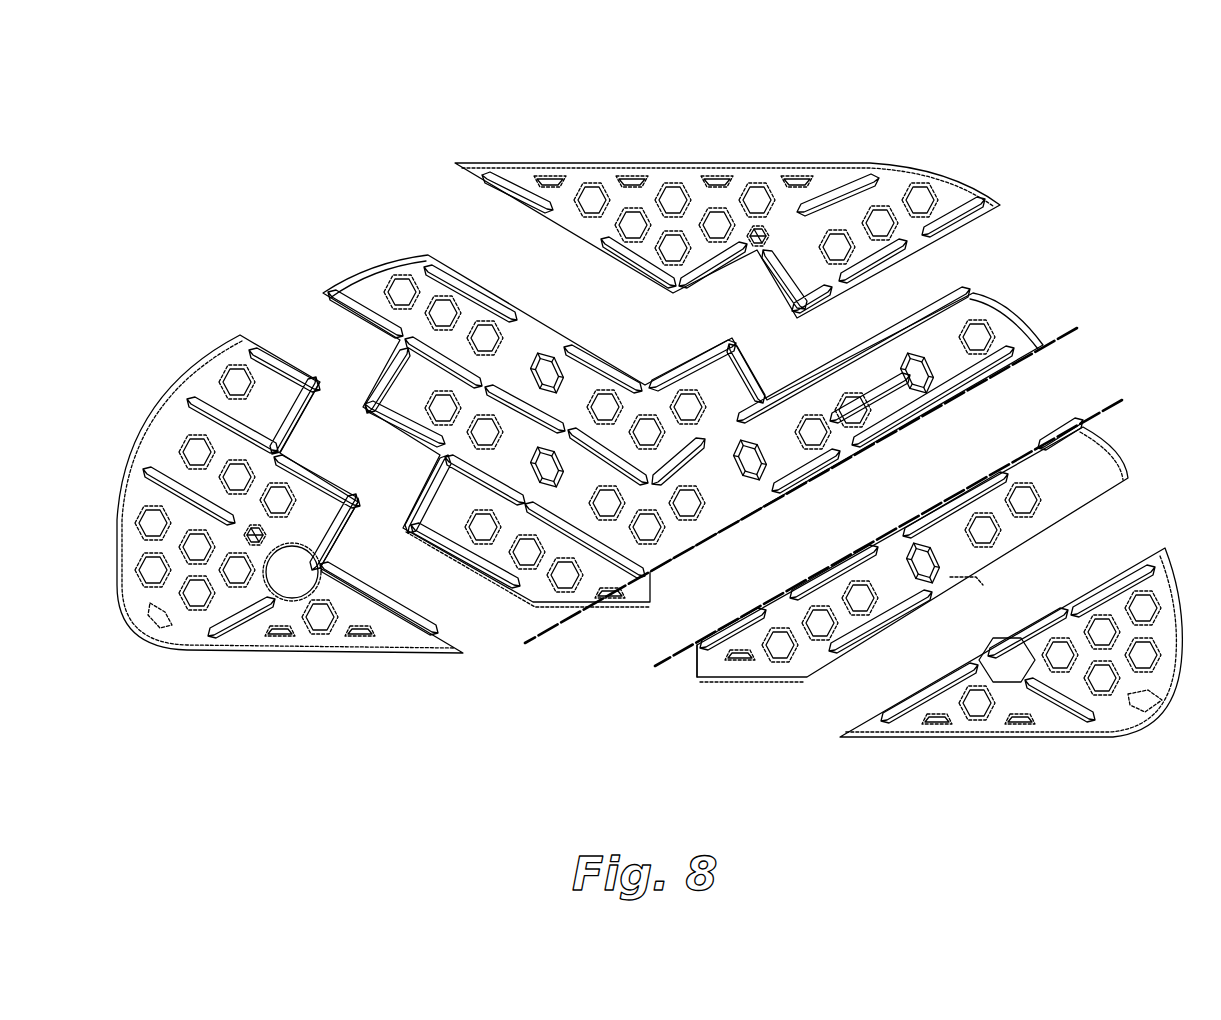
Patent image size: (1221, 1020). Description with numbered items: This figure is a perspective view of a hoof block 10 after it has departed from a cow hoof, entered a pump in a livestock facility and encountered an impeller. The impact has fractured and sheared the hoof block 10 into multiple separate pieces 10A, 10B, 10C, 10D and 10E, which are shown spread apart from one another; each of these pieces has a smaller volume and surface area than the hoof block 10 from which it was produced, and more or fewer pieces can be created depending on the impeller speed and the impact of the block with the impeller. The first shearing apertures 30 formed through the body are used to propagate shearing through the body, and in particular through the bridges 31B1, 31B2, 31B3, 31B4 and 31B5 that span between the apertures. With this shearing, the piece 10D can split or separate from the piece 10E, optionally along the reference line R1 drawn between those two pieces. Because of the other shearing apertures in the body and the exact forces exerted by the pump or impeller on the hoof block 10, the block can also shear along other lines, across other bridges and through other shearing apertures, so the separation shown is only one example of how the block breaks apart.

The hoof block 10 is at (968, 122).
The piece 10A is at (1057, 720).
The piece 10B is at (718, 188).
The piece 10C is at (247, 633).
The piece 10D is at (780, 672).
The piece 10E is at (375, 295).
The first shearing apertures 30 is at (750, 642).
The bridge 31B1 is at (705, 660).
The bridge 31B2 is at (823, 584).
The bridge 31B3 is at (905, 533).
The bridge 31B4 is at (985, 466).
The bridge 31B5 is at (1085, 428).
The reference line R1 is at (1054, 327).